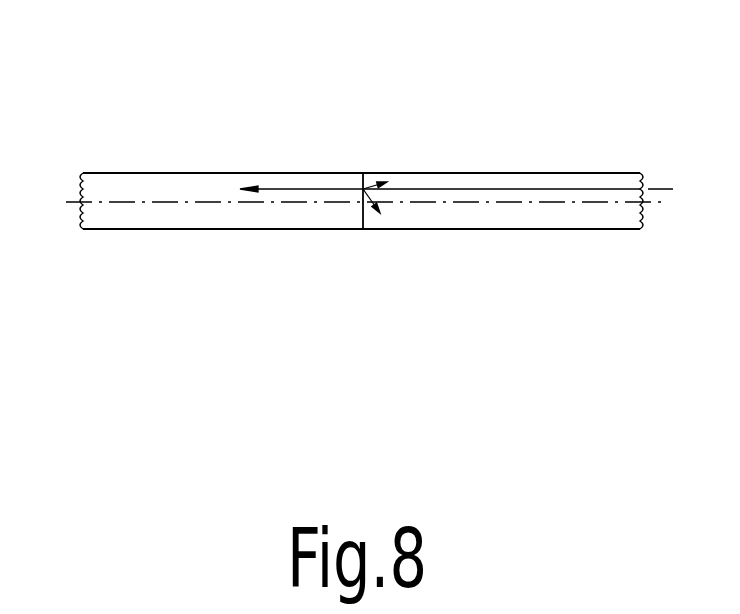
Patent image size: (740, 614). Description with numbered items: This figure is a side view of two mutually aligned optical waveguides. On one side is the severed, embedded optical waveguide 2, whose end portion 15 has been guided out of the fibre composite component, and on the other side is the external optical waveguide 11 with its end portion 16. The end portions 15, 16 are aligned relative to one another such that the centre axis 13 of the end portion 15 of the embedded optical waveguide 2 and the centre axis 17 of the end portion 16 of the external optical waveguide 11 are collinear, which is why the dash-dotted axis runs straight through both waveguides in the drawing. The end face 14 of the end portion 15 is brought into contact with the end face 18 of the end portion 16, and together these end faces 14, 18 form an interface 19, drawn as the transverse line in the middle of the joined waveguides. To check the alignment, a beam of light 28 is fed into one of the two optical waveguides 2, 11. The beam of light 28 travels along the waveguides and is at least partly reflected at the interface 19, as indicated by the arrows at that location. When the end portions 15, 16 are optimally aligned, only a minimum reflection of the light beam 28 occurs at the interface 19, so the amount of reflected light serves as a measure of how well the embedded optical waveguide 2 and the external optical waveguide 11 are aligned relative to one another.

The embedded optical waveguide 2 is at (124, 160).
The external optical waveguide 11 is at (530, 160).
The centre axis 13 is at (66, 202).
The end face 14 is at (363, 189).
The end portion 15 is at (303, 182).
The end portion 16 is at (408, 180).
The centre axis 17 is at (655, 202).
The end face 18 is at (363, 218).
The interface 19 is at (364, 160).
The beam of light 28 is at (660, 189).